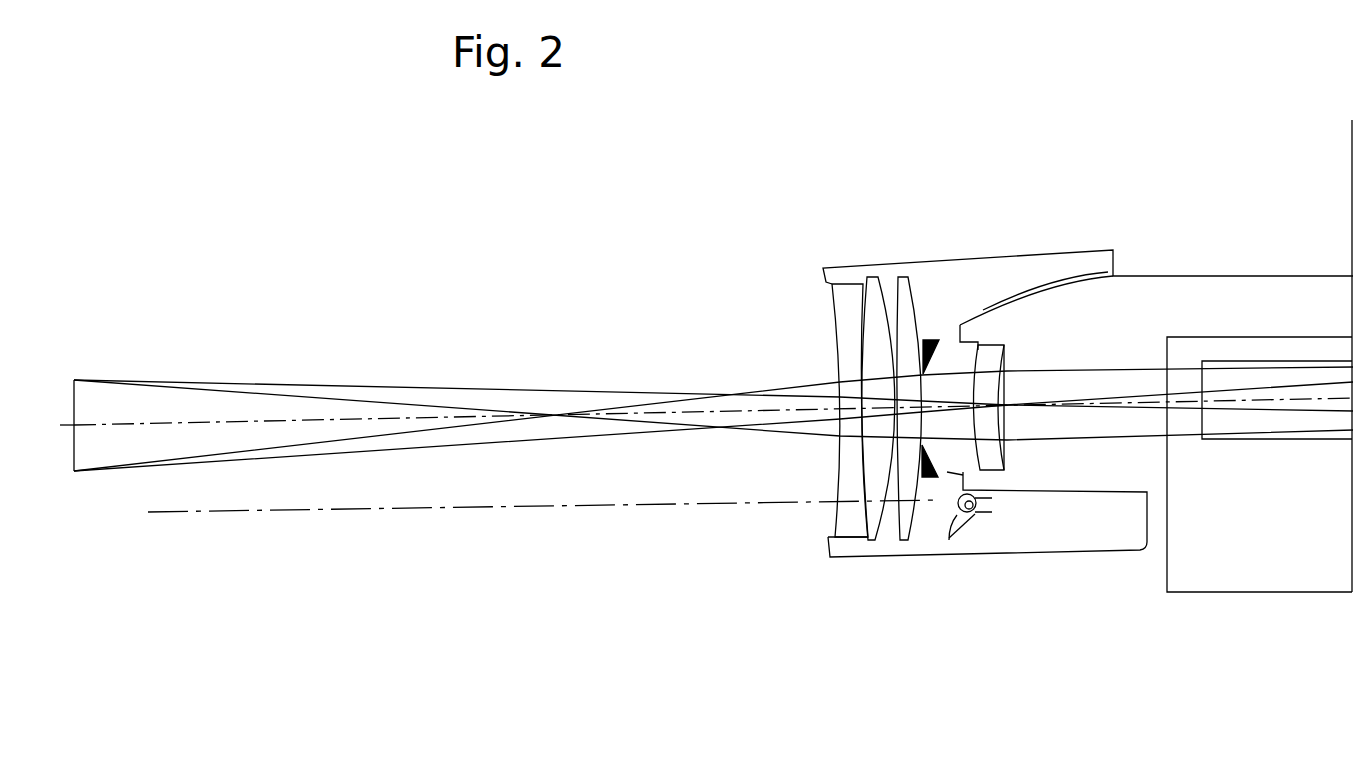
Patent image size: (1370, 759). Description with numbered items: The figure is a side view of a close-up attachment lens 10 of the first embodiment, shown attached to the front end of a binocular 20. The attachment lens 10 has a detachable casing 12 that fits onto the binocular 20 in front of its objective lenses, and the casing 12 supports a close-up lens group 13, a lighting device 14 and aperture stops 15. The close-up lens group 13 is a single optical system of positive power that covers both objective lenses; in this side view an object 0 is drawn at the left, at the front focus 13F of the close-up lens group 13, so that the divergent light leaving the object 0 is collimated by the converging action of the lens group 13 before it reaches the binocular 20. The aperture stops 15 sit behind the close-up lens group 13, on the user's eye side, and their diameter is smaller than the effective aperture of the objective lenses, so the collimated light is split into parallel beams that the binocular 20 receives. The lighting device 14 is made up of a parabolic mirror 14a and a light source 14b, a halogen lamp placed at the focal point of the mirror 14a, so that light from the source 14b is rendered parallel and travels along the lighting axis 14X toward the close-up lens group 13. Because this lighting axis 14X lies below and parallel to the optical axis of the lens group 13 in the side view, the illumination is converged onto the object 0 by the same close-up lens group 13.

The object 0 is at (74, 403).
The front focal point of lens group 13F is at (74, 425).
The rotation axis of drive mechanism 14X is at (552, 509).
The close-up attachment lens 10 is at (1063, 433).
The detachable casing 12 is at (977, 272).
The close-up lens group 13 is at (862, 545).
The aperture stops 15 is at (932, 341).
The lighting device 14 is at (984, 586).
The parabolic mirror 14a is at (975, 515).
The light source 14b is at (957, 573).
The binocular 20 is at (1238, 252).